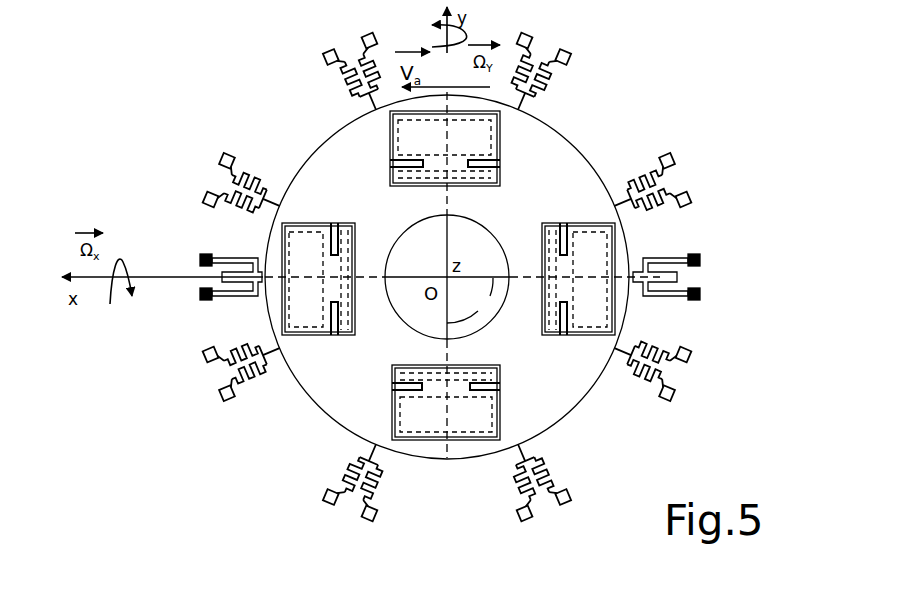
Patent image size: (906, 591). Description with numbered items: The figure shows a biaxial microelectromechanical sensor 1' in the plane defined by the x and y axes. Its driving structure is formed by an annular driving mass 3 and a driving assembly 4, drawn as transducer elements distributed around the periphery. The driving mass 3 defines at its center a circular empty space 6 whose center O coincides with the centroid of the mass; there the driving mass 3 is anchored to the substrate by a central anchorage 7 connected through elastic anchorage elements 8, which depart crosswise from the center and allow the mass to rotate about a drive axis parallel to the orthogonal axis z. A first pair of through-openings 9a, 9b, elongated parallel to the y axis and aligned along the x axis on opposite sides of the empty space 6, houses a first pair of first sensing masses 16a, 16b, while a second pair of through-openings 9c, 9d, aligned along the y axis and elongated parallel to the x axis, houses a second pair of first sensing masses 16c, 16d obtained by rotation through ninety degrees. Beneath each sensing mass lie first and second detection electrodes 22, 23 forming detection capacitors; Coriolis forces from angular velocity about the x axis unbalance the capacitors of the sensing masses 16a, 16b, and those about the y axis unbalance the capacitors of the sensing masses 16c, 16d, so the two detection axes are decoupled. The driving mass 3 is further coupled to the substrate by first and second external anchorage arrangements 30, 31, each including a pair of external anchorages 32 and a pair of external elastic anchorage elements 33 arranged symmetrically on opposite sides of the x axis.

The microelectromechanical sensor 1' is at (464, 245).
The driving mass 3 is at (576, 404).
The driving assembly 4 is at (300, 490).
The circular empty space 6 is at (468, 231).
The central anchorage 7 is at (446, 276).
The elastic anchorage elements 8 is at (470, 300).
The through-opening 9a is at (291, 320).
The through-opening 9b is at (599, 312).
The through-opening 9c is at (493, 132).
The through-opening 9d is at (414, 434).
The first sensing mass 16a is at (311, 250).
The first sensing mass 16b is at (586, 243).
The first sensing mass 16c is at (486, 151).
The first sensing mass 16d is at (489, 424).
The first detection electrode 22 is at (315, 334).
The second detection electrode 23 is at (421, 188).
The first external anchorage arrangement 30 is at (201, 273).
The second external anchorage arrangement 31 is at (713, 265).
The external anchorage 32 is at (200, 257).
The external elastic anchorage element 33 is at (238, 257).